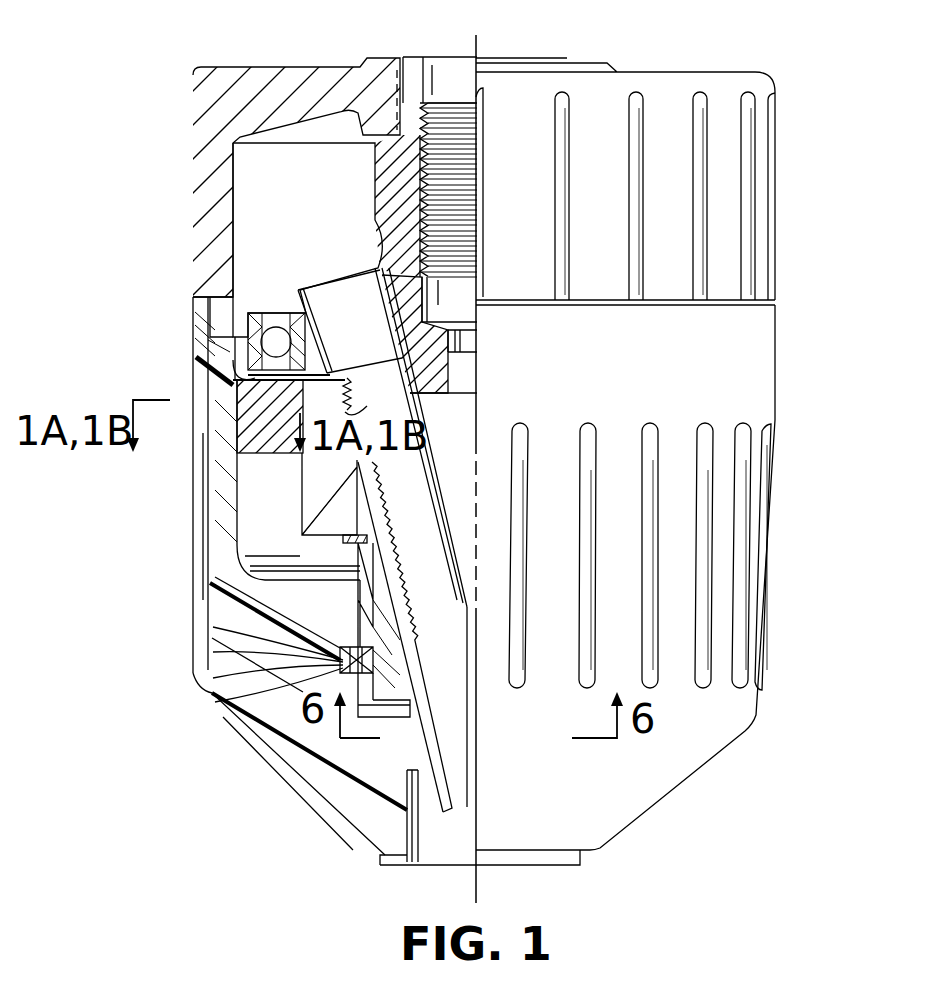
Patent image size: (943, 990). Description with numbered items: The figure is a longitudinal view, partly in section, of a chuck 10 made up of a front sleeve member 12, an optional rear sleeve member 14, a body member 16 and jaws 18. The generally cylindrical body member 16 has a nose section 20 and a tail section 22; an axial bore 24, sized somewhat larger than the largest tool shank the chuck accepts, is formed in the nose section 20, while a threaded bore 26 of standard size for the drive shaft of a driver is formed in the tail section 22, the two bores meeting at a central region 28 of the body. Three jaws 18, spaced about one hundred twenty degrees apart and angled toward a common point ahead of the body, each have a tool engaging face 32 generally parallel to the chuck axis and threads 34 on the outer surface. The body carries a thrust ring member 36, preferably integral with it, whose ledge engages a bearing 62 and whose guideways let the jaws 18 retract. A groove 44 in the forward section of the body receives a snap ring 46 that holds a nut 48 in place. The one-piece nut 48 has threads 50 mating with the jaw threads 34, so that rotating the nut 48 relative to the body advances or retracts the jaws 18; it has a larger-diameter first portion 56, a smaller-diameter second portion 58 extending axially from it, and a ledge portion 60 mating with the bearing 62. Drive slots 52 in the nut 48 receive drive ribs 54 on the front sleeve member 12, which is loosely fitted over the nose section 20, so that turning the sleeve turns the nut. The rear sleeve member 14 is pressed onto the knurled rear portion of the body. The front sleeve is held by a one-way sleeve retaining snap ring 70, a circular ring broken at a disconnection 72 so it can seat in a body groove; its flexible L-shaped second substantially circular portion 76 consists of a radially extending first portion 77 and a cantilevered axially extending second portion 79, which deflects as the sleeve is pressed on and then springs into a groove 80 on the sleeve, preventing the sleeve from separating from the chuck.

The chuck 10 is at (805, 145).
The front sleeve member 12 is at (753, 715).
The rear sleeve member 14 is at (776, 213).
The body member 16 is at (362, 600).
The jaws 18 is at (433, 540).
The nose section 20 is at (383, 697).
The tail section 22 is at (375, 163).
The axial bore 24 is at (403, 680).
The threaded bore 26 is at (448, 125).
The central region 28 is at (467, 343).
The tool engaging face 32 is at (467, 757).
The threads 34 is at (377, 478).
The thrust ring member 36 is at (298, 288).
The groove 44 is at (215, 585).
The snap ring 46 is at (345, 538).
The nut 48 is at (255, 440).
The threads 50 is at (367, 392).
The drive slots 52 is at (220, 352).
The drive ribs 54 is at (205, 308).
The first portion 56 is at (273, 440).
The second portion 58 is at (323, 483).
The ledge portion 60 is at (232, 371).
The bearing 62 is at (258, 313).
The sleeve retaining snap ring 70 is at (400, 590).
The disconnection 72 is at (392, 665).
The second substantially circular portion 76 is at (215, 653).
The first portion 77 is at (218, 708).
The second portion 79 is at (215, 627).
The groove 80 is at (215, 688).